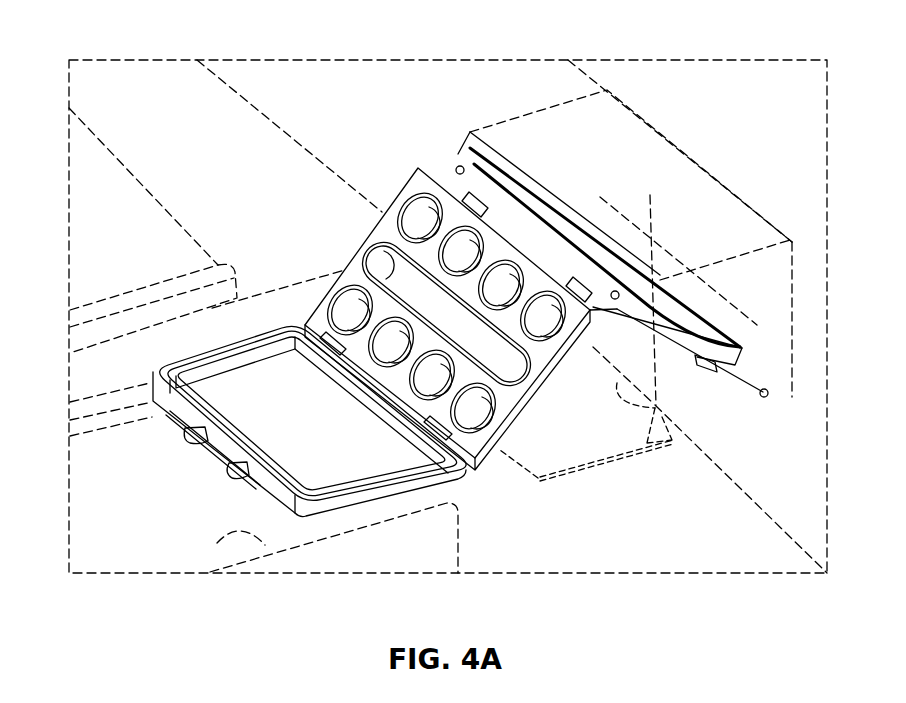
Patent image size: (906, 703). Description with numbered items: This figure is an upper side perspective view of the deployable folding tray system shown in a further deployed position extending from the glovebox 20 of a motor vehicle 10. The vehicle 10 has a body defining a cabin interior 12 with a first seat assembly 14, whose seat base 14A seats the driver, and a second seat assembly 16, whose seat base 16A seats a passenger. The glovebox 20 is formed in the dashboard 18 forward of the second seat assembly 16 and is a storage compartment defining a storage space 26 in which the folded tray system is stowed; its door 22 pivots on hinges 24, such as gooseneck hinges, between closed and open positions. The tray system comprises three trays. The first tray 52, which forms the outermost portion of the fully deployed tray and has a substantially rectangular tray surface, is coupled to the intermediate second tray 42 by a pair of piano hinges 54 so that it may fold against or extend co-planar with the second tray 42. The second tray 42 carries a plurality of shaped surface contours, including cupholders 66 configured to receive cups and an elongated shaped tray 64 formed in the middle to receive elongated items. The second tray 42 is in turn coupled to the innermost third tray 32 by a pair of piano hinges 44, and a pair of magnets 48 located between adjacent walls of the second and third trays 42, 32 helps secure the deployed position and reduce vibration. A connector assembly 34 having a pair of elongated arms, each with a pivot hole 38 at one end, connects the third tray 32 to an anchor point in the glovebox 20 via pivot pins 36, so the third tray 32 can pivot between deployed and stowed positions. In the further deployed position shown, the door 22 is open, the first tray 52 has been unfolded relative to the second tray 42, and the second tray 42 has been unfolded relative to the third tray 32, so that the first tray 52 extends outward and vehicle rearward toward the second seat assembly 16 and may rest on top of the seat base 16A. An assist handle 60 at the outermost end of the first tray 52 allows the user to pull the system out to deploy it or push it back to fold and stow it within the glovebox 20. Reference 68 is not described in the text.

The motor vehicle 10 is at (791, 52).
The cabin interior 12 is at (324, 135).
The first seat assembly 14 is at (138, 172).
The seat base 14A is at (103, 230).
The second seat assembly 16 is at (468, 538).
The seat base 16A is at (272, 558).
The dashboard 18 is at (443, 147).
The glovebox 20 is at (675, 130).
The door 22 is at (640, 478).
The hinges 24 is at (500, 450).
The storage space 26 is at (655, 408).
The third tray 32 is at (695, 313).
The connector assembly 34 is at (735, 362).
The pivot pins 36 is at (768, 394).
The pivot hole 38 is at (766, 390).
The second tray 42 is at (525, 402).
The piano hinges 44 is at (437, 184).
The magnets 48 is at (462, 165).
The first tray 52 is at (260, 483).
The piano hinges 54 is at (340, 342).
The assist handle 60 is at (212, 452).
The elongated shaped tray 64 is at (418, 212).
The cupholders 66 is at (380, 262).
The inner wall 68 is at (218, 385).